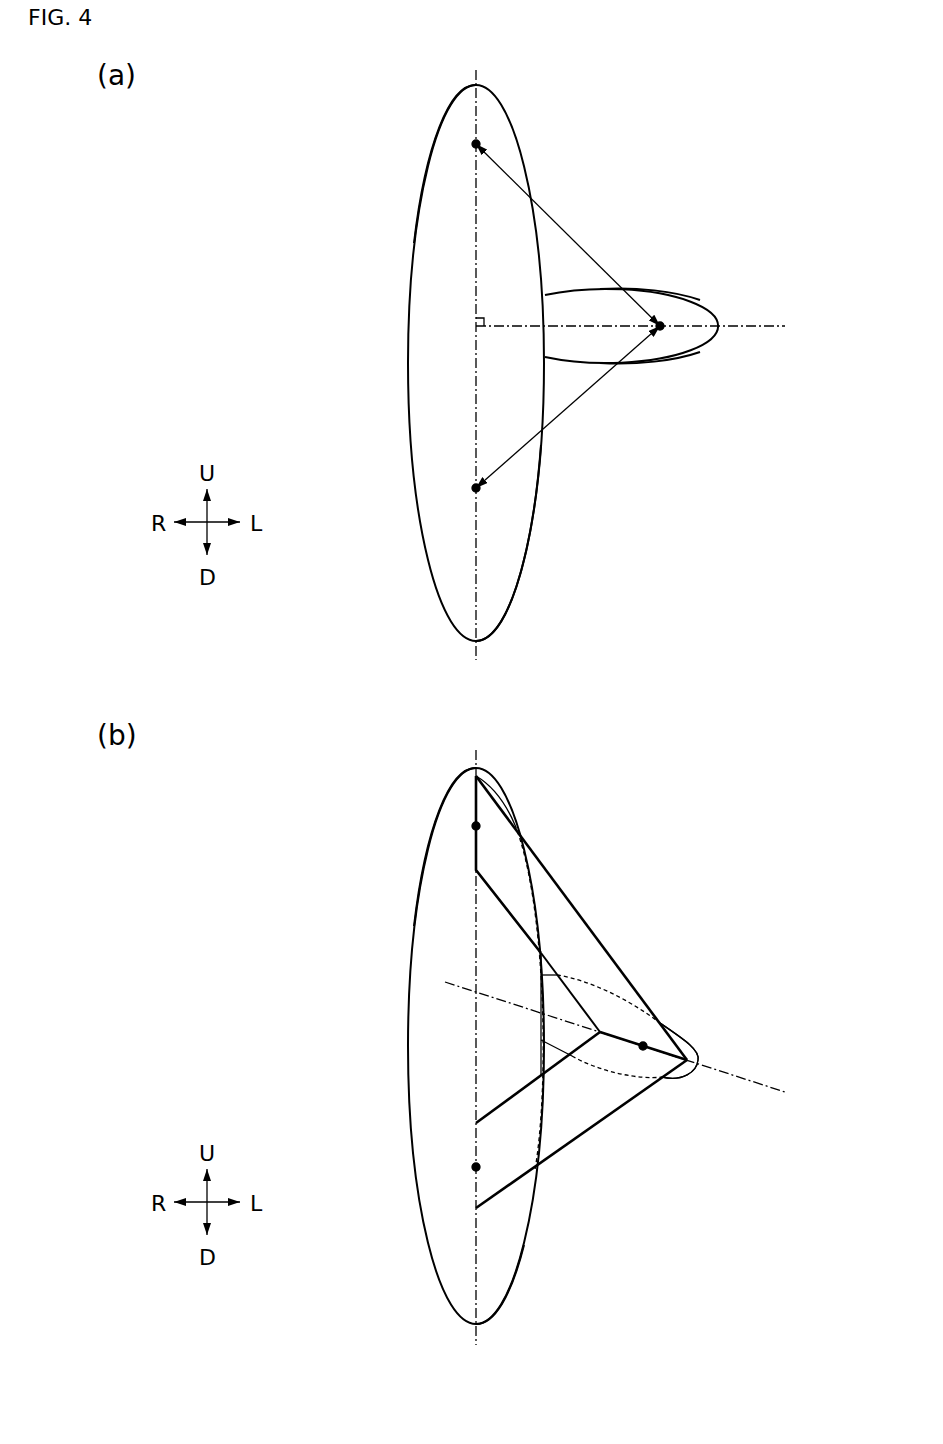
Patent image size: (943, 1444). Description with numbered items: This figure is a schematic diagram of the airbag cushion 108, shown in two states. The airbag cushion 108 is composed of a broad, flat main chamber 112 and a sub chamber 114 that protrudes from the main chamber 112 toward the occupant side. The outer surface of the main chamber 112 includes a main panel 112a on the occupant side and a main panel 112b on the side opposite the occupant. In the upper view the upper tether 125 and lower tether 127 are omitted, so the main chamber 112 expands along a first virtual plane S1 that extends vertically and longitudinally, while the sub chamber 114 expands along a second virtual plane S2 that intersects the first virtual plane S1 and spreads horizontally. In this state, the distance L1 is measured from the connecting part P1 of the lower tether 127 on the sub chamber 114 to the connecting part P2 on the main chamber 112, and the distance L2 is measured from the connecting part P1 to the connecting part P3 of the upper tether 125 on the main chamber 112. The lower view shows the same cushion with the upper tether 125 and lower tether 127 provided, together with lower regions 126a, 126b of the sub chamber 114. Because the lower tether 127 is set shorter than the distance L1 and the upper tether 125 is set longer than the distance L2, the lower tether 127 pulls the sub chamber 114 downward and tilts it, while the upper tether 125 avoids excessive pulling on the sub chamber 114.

The airbag cushion 108 is at (354, 120).
The main chamber 112 is at (424, 185).
The main panel 112a is at (542, 445).
The main panel 112b is at (414, 243).
The sub chamber 114 is at (690, 299).
The upper tether 125 is at (564, 895).
The lower region 126a is at (673, 288).
The lower region 126b is at (628, 364).
The lower tether 127 is at (553, 1153).
The connecting part P1 is at (664, 324).
The connecting part P2 is at (471, 489).
The connecting part P3 is at (471, 142).
The first virtual plane S1 is at (475, 693).
The second virtual plane S2 is at (632, 712).
The distance L1 is at (517, 453).
The distance L2 is at (559, 223).